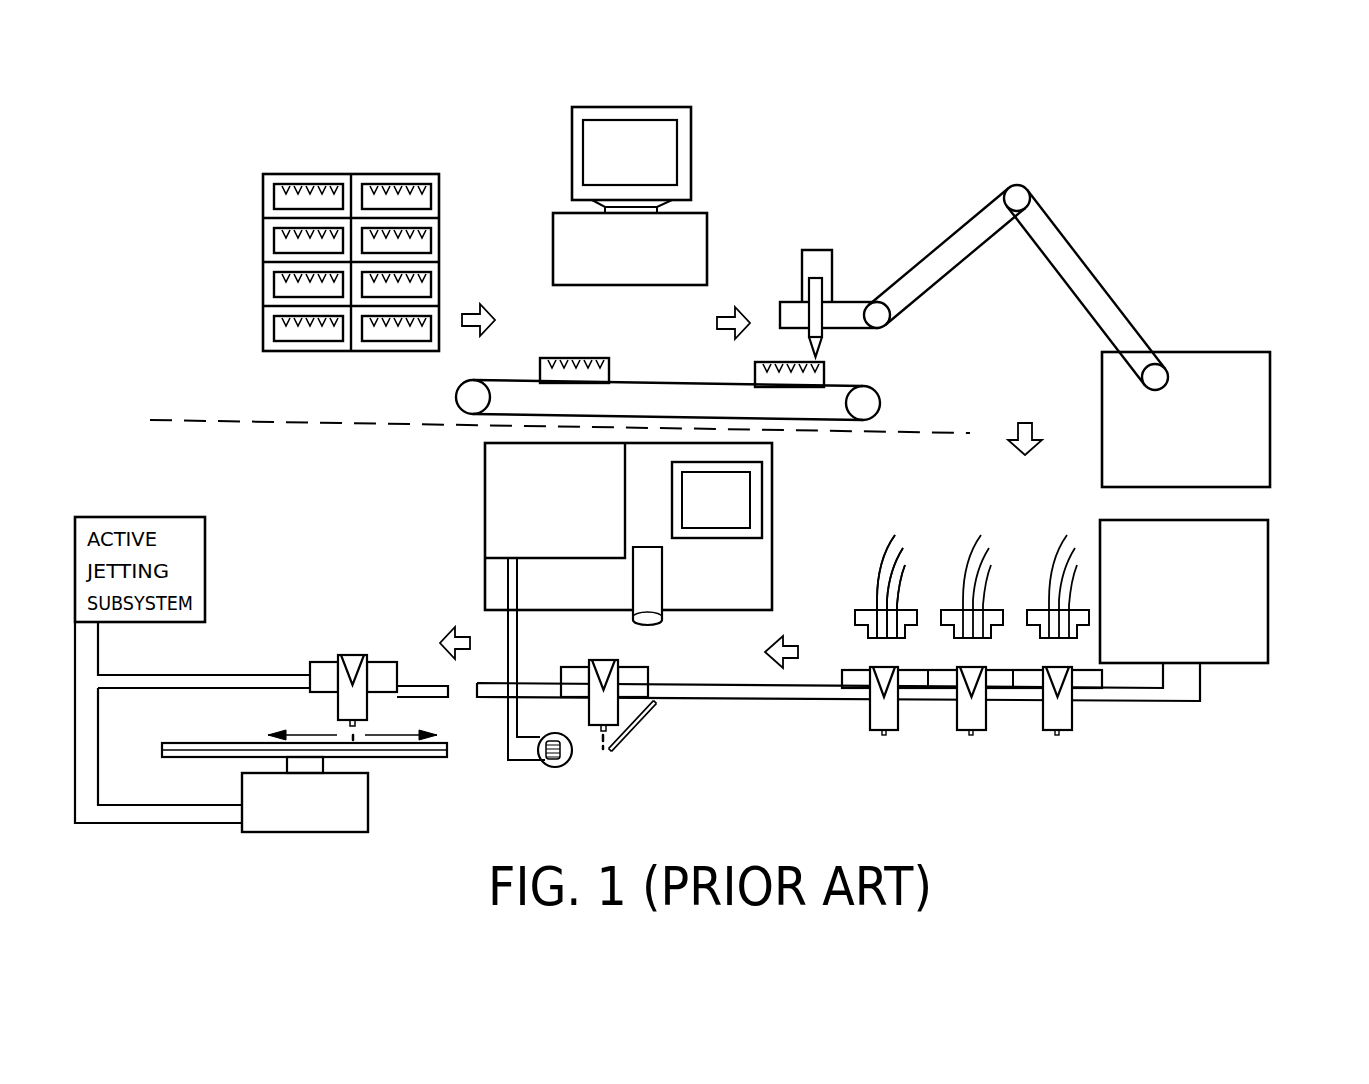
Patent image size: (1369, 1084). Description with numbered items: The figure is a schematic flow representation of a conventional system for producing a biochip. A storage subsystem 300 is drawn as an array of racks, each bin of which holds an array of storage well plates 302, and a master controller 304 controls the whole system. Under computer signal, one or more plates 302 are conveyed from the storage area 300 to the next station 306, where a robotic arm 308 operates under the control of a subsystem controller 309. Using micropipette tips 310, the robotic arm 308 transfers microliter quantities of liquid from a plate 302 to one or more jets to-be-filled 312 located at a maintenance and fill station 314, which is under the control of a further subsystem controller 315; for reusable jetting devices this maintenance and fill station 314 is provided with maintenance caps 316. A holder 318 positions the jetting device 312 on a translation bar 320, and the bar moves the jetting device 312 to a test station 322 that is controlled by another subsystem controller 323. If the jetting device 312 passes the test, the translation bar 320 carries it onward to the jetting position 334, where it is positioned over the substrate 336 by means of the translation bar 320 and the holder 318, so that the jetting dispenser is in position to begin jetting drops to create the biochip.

The storage subsystem 300 is at (263, 258).
The storage well plates 302 is at (425, 206).
The master controller 304 is at (691, 130).
The next station 306 is at (755, 375).
The robotic arm 308 is at (960, 228).
The subsystem controller 309 is at (1270, 420).
The micropipette tips 310 is at (830, 345).
The jet to-be-filled 312 is at (332, 660).
The fill station 314 is at (835, 598).
The subsystem controller 315 is at (1268, 592).
The maintenance caps 316 is at (880, 555).
The holder 318 is at (398, 672).
The translation bar 320 is at (700, 700).
The test station 322 is at (637, 666).
The subsystem controller 323 is at (485, 475).
The jetting position 334 is at (380, 660).
The substrate 336 is at (190, 758).